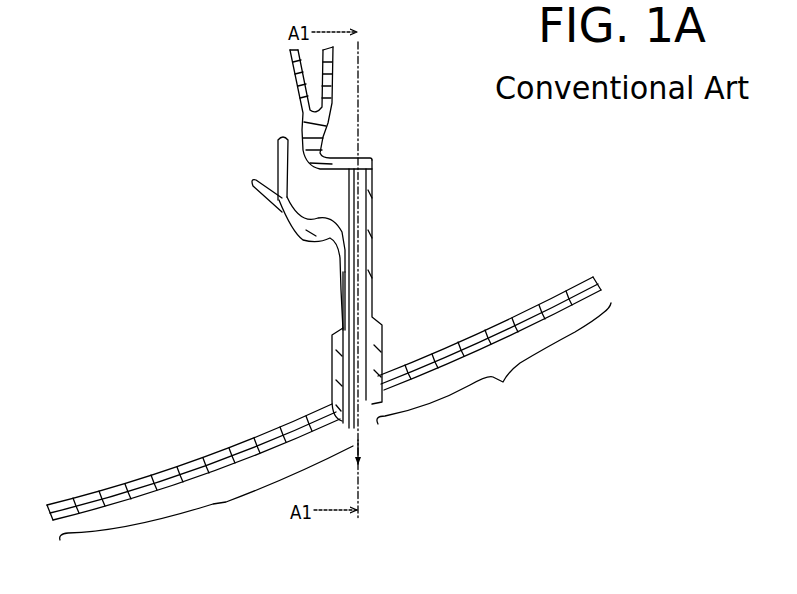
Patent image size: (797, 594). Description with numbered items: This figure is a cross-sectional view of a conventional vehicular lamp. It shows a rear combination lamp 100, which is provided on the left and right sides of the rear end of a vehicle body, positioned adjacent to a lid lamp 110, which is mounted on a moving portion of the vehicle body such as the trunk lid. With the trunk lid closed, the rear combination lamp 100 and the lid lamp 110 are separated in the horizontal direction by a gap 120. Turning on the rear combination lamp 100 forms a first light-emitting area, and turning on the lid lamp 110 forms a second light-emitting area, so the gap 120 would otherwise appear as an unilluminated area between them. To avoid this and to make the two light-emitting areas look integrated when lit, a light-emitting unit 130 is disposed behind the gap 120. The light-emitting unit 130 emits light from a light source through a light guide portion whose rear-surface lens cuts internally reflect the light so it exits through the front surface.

The rear combination lamp 100 is at (585, 200).
The lid lamp 110 is at (115, 383).
The gap 120 is at (362, 408).
The light-emitting unit 130 is at (358, 173).